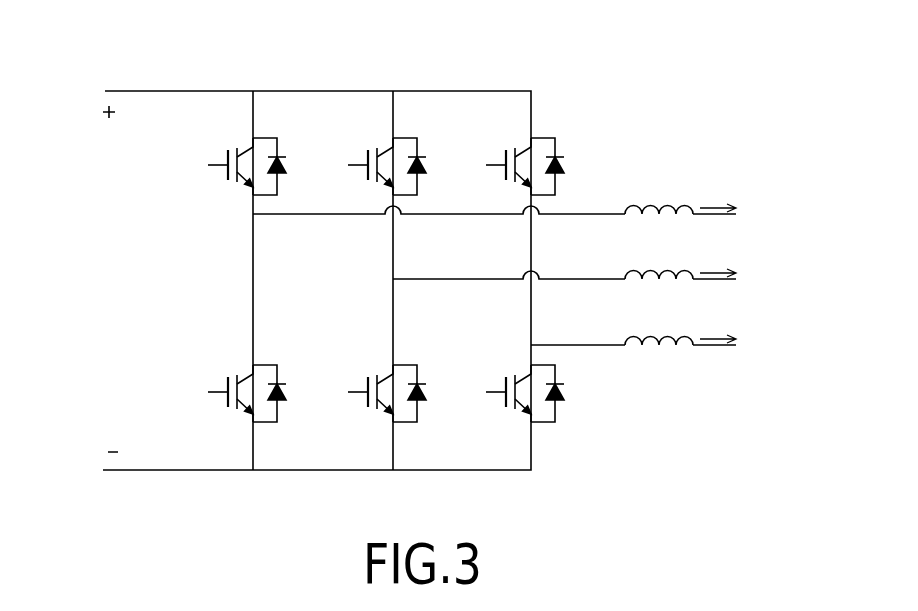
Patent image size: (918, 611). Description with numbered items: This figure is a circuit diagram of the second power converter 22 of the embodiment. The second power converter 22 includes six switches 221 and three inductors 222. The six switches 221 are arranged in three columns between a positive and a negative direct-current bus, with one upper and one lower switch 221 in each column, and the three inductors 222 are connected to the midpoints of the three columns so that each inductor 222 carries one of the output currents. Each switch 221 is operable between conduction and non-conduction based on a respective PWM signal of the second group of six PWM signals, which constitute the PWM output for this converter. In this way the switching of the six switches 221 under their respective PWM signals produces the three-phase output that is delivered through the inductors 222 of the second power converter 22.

The second power converter 22 is at (622, 112).
The switch 221 is at (369, 261).
The inductor 222 is at (645, 251).